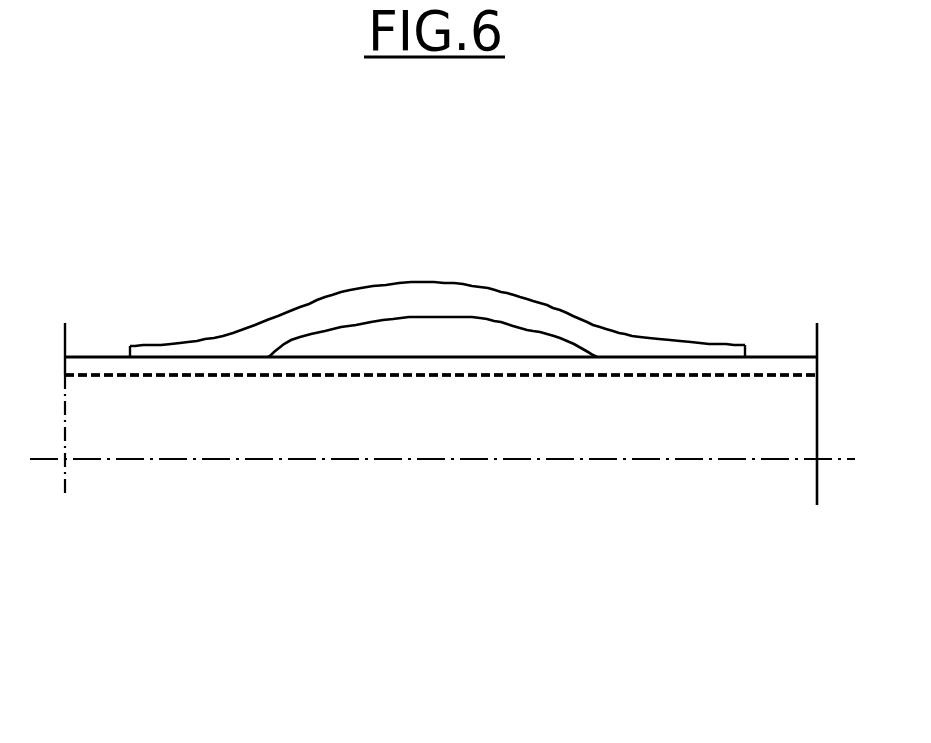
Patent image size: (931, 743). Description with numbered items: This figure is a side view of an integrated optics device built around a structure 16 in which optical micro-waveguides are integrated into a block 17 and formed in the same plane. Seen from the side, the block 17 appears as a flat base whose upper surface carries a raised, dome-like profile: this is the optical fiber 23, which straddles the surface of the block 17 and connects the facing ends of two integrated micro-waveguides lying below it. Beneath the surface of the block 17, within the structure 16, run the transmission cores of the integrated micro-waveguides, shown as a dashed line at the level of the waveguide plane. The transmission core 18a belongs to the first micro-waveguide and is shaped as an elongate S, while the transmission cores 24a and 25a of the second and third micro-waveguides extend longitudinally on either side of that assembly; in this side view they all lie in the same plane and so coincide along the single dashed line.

The structure 16 is at (196, 316).
The block 17 is at (763, 418).
The optical fiber 23 is at (515, 305).
The transmission core 18a is at (225, 383).
The transmission core 24a is at (441, 482).
The transmission core 25a is at (441, 500).